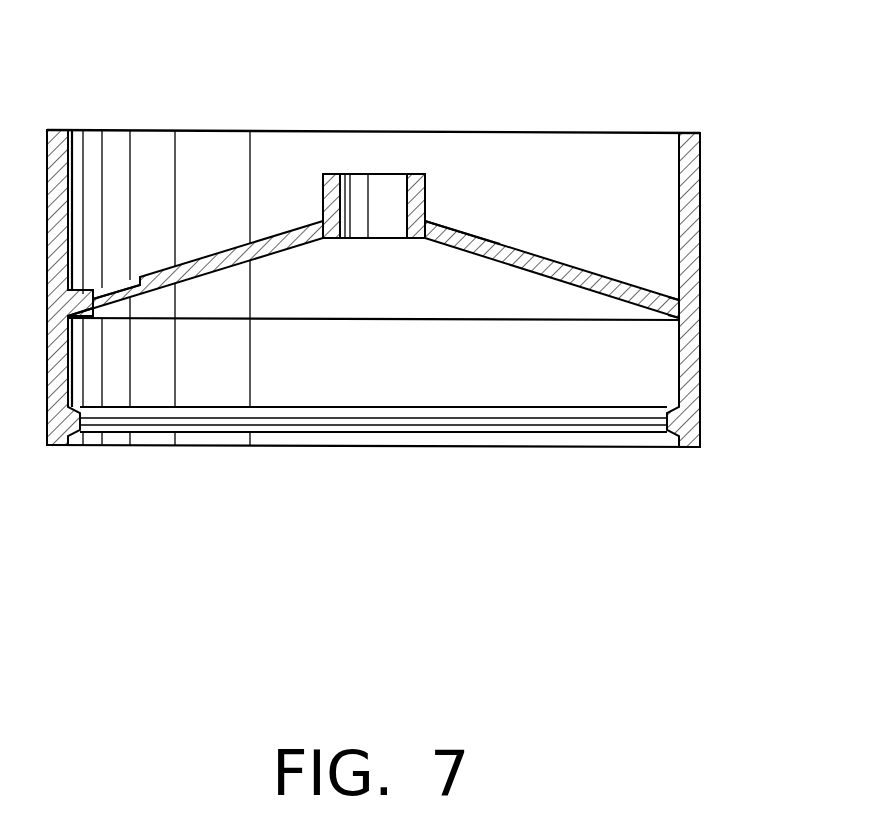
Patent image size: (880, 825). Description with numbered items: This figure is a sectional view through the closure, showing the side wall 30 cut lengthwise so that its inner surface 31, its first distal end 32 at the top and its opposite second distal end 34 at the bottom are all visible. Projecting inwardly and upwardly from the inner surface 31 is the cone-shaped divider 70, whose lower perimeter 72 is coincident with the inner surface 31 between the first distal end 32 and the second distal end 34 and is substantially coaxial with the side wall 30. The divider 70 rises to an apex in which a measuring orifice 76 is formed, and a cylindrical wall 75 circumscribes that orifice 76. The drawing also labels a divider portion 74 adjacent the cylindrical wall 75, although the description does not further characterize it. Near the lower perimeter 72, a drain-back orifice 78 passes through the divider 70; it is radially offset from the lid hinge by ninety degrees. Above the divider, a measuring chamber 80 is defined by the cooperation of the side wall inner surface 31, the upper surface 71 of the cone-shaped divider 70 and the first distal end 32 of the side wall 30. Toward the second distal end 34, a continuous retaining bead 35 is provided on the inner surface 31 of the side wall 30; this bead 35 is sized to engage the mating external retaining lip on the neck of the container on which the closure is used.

The side wall 30 is at (702, 247).
The inner surface 31 is at (590, 209).
The first distal end 32 is at (700, 133).
The second distal end 34 is at (700, 447).
The continuous retaining bead 35 is at (226, 422).
The cone-shaped divider 70 is at (512, 247).
The upper surface 71 is at (222, 247).
The lower perimeter 72 is at (677, 293).
The upper conical surface 74 is at (437, 201).
The cylindrical wall 75 is at (323, 192).
The measuring orifice 76 is at (407, 203).
The drain-back orifice 78 is at (113, 290).
The measuring chamber 80 is at (276, 187).